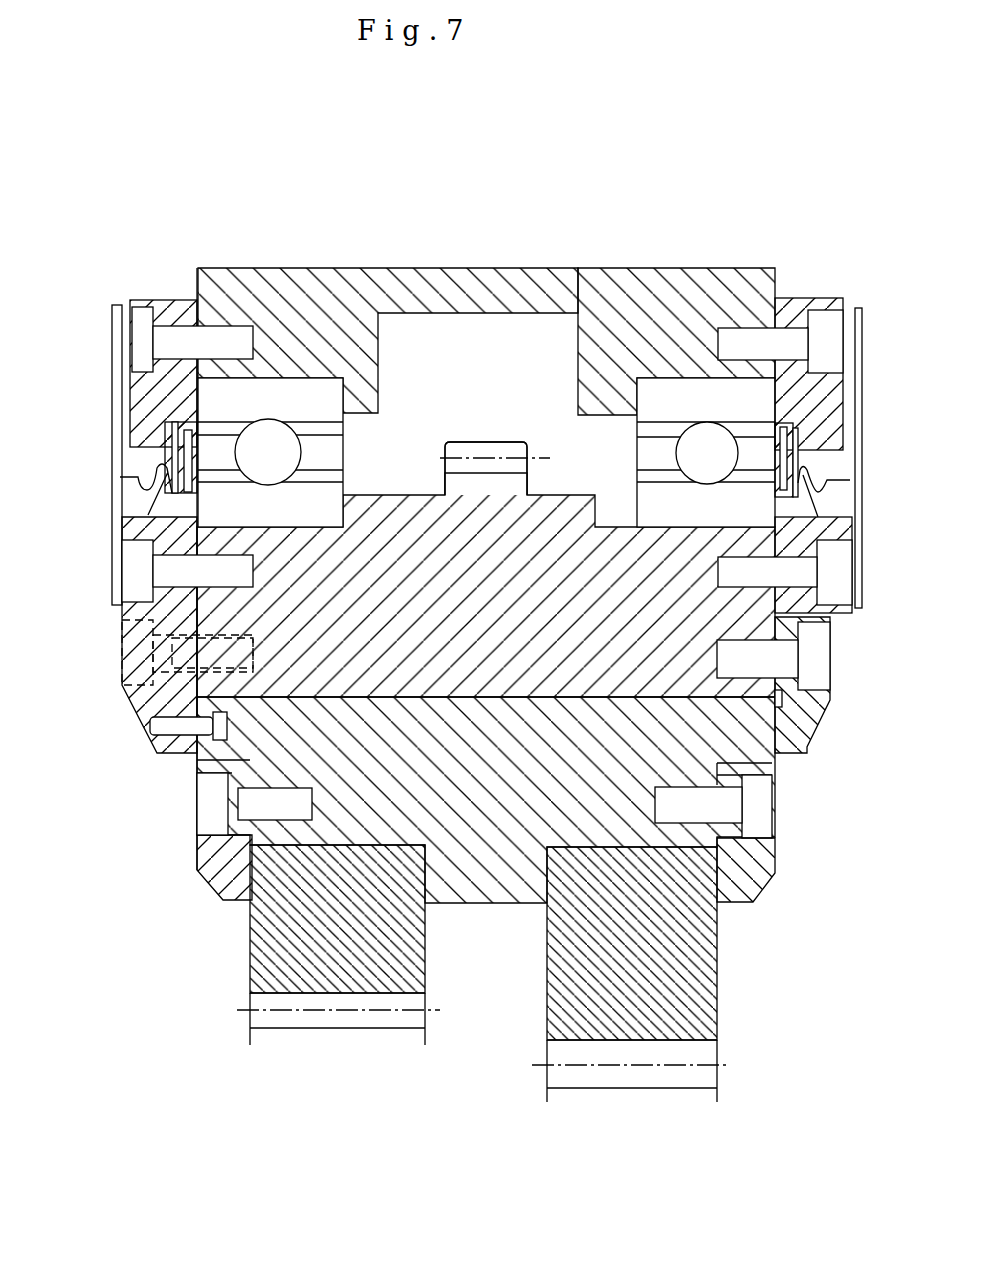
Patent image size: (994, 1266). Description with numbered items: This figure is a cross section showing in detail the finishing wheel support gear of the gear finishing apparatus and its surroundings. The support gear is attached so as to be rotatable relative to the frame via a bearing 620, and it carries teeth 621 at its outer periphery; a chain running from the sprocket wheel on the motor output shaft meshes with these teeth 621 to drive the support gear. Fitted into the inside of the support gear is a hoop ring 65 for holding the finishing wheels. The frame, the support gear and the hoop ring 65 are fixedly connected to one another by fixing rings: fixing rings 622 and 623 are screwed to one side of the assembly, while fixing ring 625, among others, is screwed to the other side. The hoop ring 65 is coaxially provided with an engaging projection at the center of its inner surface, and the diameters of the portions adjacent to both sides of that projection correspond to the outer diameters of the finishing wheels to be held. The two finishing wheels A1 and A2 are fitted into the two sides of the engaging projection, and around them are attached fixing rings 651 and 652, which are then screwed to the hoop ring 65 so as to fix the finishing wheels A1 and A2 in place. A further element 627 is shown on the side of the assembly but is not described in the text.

The hoop ring 65 is at (742, 747).
The bearing 620 is at (308, 398).
The teeth 621 is at (470, 450).
The fixing ring 622 is at (143, 403).
The fixing ring 623 is at (137, 611).
The fixing ring 625 is at (828, 405).
The spring clip 627 is at (836, 538).
The fixing ring 651 is at (220, 877).
The fixing ring 652 is at (802, 713).
The finishing wheel A1 is at (350, 1038).
The finishing wheel A2 is at (640, 1100).